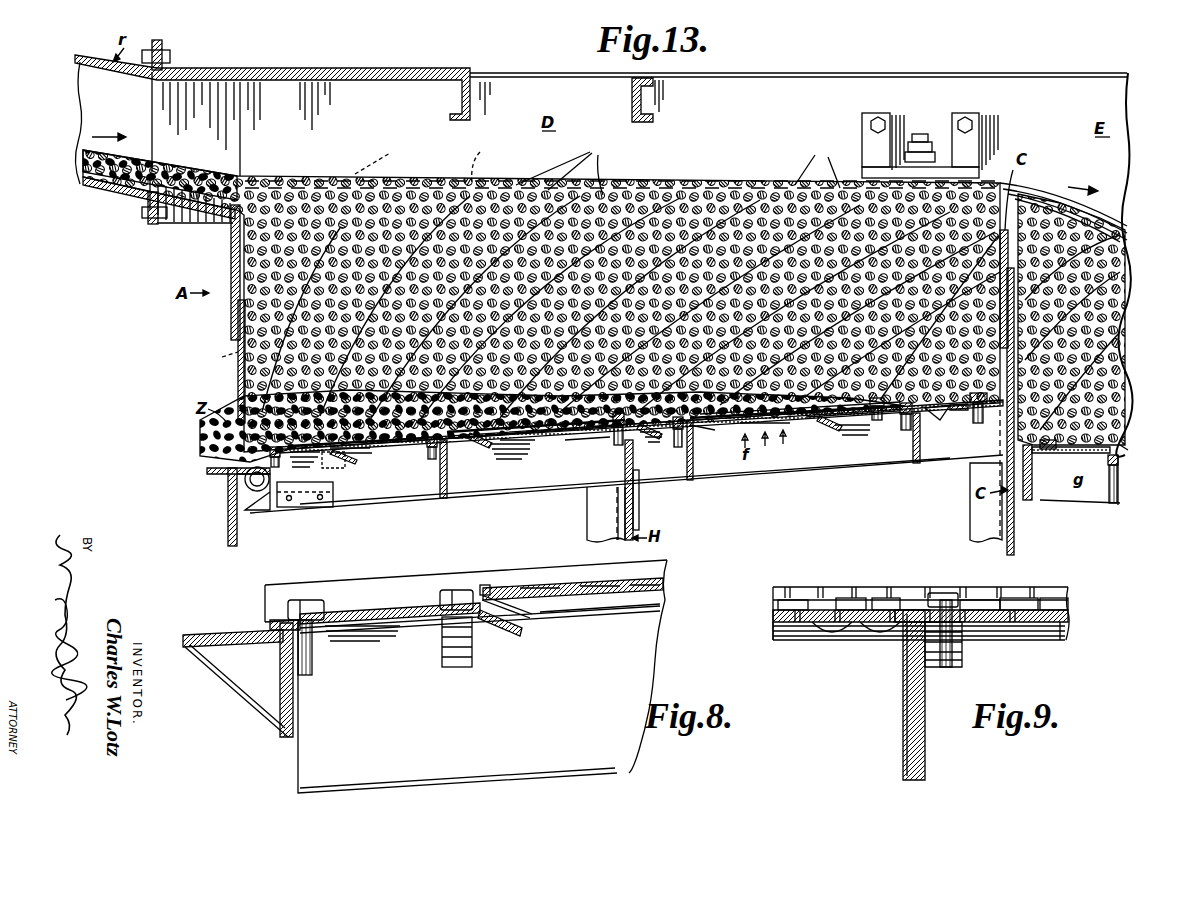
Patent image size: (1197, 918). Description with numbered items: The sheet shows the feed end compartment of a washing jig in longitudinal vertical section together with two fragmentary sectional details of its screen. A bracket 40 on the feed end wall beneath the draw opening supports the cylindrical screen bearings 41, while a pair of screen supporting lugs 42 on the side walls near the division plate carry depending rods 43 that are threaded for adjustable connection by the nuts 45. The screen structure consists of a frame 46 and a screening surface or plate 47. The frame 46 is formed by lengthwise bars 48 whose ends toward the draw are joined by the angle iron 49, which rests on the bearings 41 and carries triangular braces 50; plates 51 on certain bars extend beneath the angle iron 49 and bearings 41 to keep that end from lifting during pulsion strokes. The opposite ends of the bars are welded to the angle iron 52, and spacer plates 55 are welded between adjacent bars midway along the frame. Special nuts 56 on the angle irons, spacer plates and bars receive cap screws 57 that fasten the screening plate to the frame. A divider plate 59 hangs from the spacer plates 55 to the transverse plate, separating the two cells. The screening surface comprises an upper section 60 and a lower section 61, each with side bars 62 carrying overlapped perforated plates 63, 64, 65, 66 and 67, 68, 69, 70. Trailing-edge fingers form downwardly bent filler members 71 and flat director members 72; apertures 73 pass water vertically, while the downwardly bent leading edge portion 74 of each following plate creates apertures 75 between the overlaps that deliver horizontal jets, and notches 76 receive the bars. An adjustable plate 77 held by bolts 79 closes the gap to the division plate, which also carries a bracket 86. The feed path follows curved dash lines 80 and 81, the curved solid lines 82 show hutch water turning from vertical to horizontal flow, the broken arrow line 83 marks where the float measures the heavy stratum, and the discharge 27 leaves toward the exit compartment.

In FIG. 13, the discharge flow 27 is at (1040, 192).
In FIG. 13, the bracket 40 is at (246, 520).
In FIG. 13, the screen bearings 41 is at (270, 500).
In FIG. 13, the screen supporting lugs 42 is at (1003, 233).
In FIG. 13, the depending rod 43 is at (922, 134).
In FIG. 13, the nuts 45 is at (903, 152).
In FIG. 13, the frame 46 is at (823, 468).
In FIG. 8, the frame 46 is at (625, 657).
In FIG. 9, the frame 46 is at (897, 710).
In FIG. 13, the screening surface or plate 47 is at (492, 449).
In FIG. 8, the screening surface or plate 47 is at (444, 572).
In FIG. 9, the screening surface or plate 47 is at (1030, 575).
In FIG. 13, the bars 48 is at (880, 470).
In FIG. 8, the bars 48 is at (620, 755).
In FIG. 9, the bars 48 is at (925, 738).
In FIG. 13, the angle iron 49 is at (222, 476).
In FIG. 8, the angle iron 49 is at (300, 690).
In FIG. 8, the triangular braces 50 is at (242, 700).
In FIG. 13, the plates 51 is at (303, 508).
In FIG. 13, the angle iron 52 is at (1020, 506).
In FIG. 13, the spacer plates 55 is at (1085, 505).
In FIG. 13, the special nut 56 is at (1120, 475).
In FIG. 8, the special nut 56 is at (472, 662).
In FIG. 9, the special nut 56 is at (955, 668).
In FIG. 13, the cap screws 57 is at (878, 420).
In FIG. 8, the cap screws 57 is at (440, 596).
In FIG. 9, the cap screws 57 is at (945, 590).
In FIG. 13, the divider plate 59 is at (640, 512).
In FIG. 13, the upper section 60 is at (790, 428).
In FIG. 13, the lower section 61 is at (530, 450).
In FIG. 8, the lower section 61 is at (568, 622).
In FIG. 9, the lower section 61 is at (1018, 628).
In FIG. 13, the side bars 62 is at (705, 430).
In FIG. 8, the side bars 62 is at (532, 574).
In FIG. 13, the perforated plate 63 is at (938, 424).
In FIG. 13, the perforated plate 64 is at (855, 420).
In FIG. 13, the perforated plate 65 is at (770, 440).
In FIG. 13, the perforated plate 66 is at (650, 440).
In FIG. 13, the perforated plate 67 is at (612, 440).
In FIG. 13, the perforated plate 68 is at (508, 455).
In FIG. 13, the perforated plate 69 is at (392, 452).
In FIG. 8, the perforated plate 69 is at (610, 615).
In FIG. 9, the perforated plate 69 is at (1050, 630).
In FIG. 13, the perforated plate 70 is at (320, 462).
In FIG. 8, the perforated plate 70 is at (403, 630).
In FIG. 9, the perforated plate 70 is at (1010, 590).
In FIG. 13, the filler members 71 is at (688, 442).
In FIG. 8, the filler members 71 is at (528, 626).
In FIG. 9, the filler members 71 is at (885, 590).
In FIG. 13, the director members 72 is at (434, 460).
In FIG. 8, the director members 72 is at (484, 583).
In FIG. 9, the director members 72 is at (1065, 578).
In FIG. 8, the apertures 73 is at (575, 588).
In FIG. 9, the apertures 73 is at (862, 638).
In FIG. 13, the leading edge portion 74 is at (830, 432).
In FIG. 8, the leading edge portion 74 is at (515, 640).
In FIG. 9, the leading edge portion 74 is at (1068, 638).
In FIG. 9, the apertures 75 is at (988, 630).
In FIG. 9, the notches 76 is at (898, 640).
In FIG. 13, the adjustable plate 77 is at (1060, 452).
In FIG. 13, the bolts 79 is at (1040, 470).
In FIG. 13, the curved dash line 80 is at (220, 358).
In FIG. 13, the curved dash line 81 is at (377, 156).
In FIG. 13, the curved solid lines 82 is at (678, 167).
In FIG. 13, the vertical broken arrow line 83 is at (479, 161).
In FIG. 13, the bracket 86 is at (1018, 520).